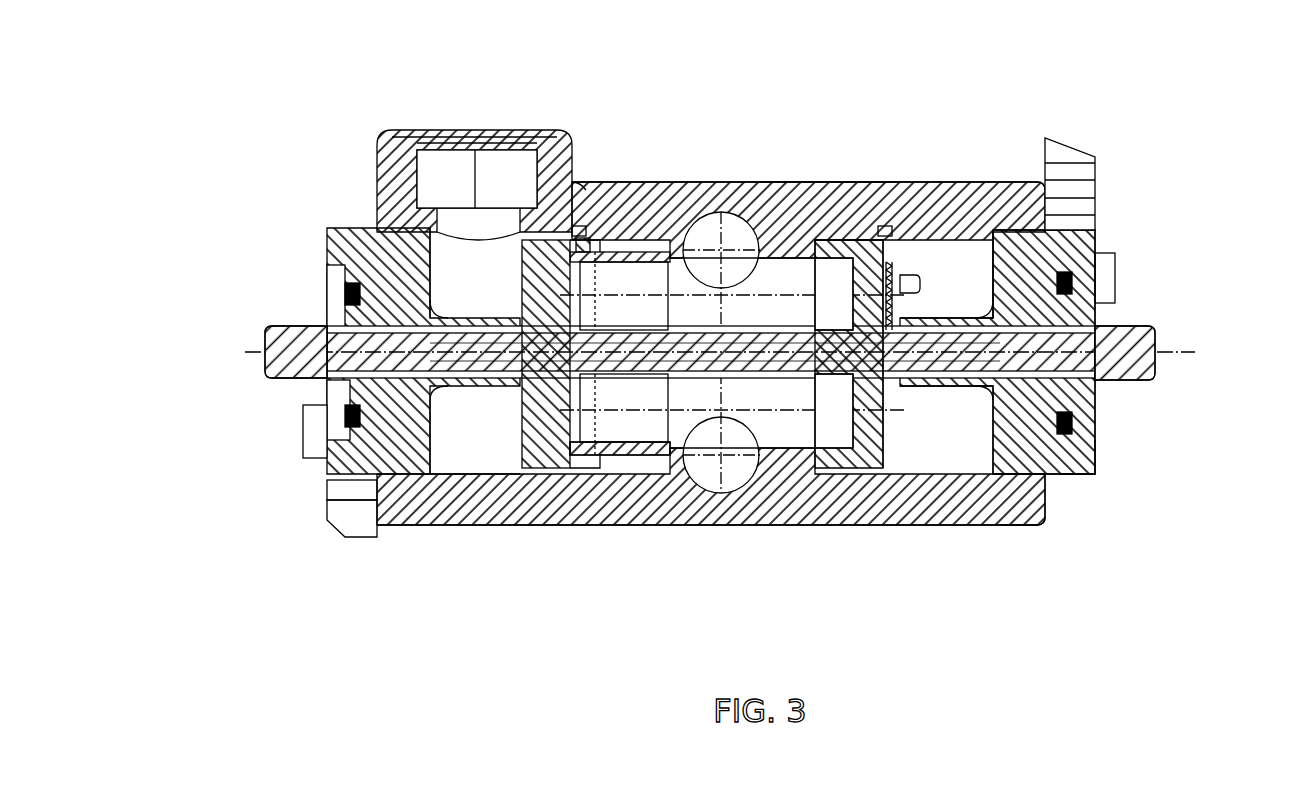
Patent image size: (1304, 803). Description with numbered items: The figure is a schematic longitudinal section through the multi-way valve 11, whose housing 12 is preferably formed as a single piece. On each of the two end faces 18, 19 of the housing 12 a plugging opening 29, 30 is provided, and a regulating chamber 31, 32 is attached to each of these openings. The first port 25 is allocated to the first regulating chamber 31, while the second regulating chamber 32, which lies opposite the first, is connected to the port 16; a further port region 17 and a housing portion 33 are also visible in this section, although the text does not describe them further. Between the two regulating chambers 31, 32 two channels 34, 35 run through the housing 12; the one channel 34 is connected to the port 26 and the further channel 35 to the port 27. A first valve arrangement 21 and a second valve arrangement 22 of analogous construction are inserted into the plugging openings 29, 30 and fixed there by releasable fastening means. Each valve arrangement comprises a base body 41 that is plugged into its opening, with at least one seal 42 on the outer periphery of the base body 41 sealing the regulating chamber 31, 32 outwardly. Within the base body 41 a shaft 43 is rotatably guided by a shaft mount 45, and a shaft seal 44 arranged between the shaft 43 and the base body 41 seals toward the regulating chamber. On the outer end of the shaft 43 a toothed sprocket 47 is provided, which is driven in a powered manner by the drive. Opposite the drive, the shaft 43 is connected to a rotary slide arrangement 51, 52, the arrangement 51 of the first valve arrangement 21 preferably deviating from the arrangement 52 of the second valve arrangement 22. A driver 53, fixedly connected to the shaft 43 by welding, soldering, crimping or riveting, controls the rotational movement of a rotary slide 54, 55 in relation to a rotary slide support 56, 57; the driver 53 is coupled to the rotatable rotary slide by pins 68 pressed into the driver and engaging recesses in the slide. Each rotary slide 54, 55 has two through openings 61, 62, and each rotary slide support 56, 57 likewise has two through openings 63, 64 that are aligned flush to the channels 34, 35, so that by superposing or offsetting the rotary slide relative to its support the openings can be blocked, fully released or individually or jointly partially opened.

The valve 11 is at (668, 125).
The housing 12 is at (740, 195).
The port 16 is at (495, 165).
The port fitting 17 is at (443, 197).
The end face 18 is at (1045, 492).
The end face 19 is at (373, 492).
The first valve arrangement 21 is at (1158, 222).
The second valve arrangement 22 is at (285, 236).
The first port 25 is at (960, 412).
The port 26 is at (722, 470).
The port 27 is at (712, 245).
The plugging opening 29 is at (1058, 215).
The plugging opening 30 is at (360, 218).
The first regulating chamber 31 is at (938, 382).
The second regulating chamber 32 is at (463, 450).
The transfer passage 33 is at (722, 378).
The channel 34 is at (792, 430).
The channel 35 is at (777, 270).
The base body 41 is at (342, 467).
The seal 42 is at (410, 463).
The shaft 43 is at (272, 352).
The shaft seal 44 is at (395, 313).
The shaft mount 45 is at (508, 303).
The toothed sprocket 47 is at (262, 312).
The rotary slide arrangement 51 is at (845, 228).
The rotary slide arrangement 52 is at (582, 228).
The driver 53 is at (580, 215).
The rotary slide 54 is at (865, 225).
The rotary slide 55 is at (537, 473).
The rotary slide support 56 is at (822, 218).
The rotary slide support 57 is at (585, 473).
The through opening 61 is at (875, 220).
The through opening 62 is at (552, 420).
The through opening 63 is at (609, 319).
The through opening 64 is at (609, 437).
The pin 68 is at (913, 283).